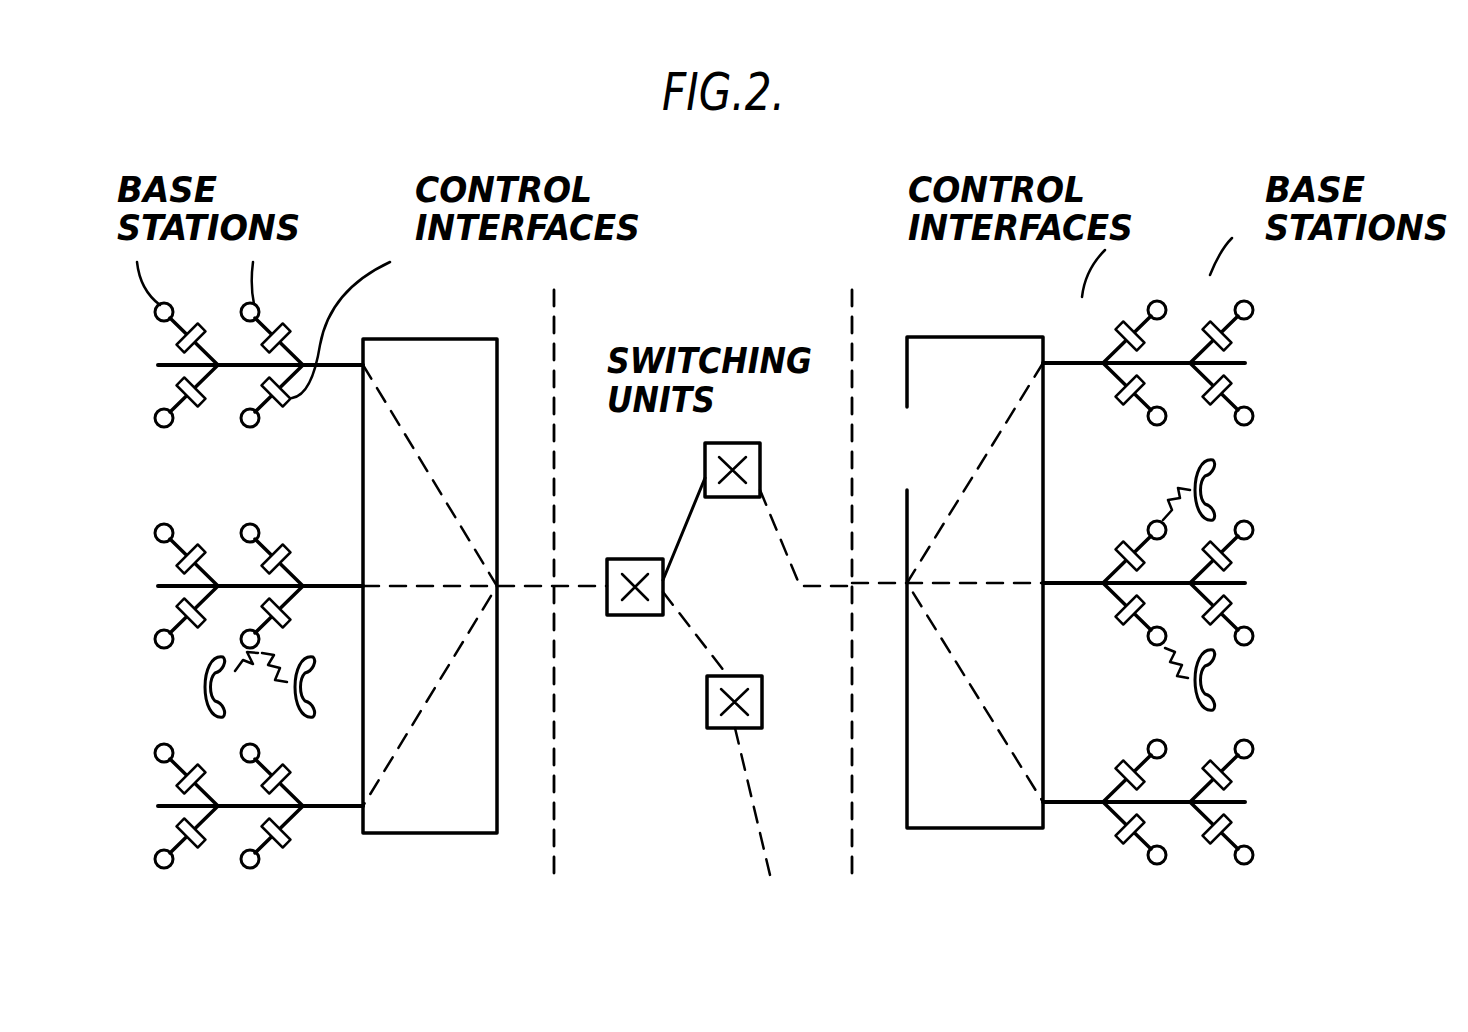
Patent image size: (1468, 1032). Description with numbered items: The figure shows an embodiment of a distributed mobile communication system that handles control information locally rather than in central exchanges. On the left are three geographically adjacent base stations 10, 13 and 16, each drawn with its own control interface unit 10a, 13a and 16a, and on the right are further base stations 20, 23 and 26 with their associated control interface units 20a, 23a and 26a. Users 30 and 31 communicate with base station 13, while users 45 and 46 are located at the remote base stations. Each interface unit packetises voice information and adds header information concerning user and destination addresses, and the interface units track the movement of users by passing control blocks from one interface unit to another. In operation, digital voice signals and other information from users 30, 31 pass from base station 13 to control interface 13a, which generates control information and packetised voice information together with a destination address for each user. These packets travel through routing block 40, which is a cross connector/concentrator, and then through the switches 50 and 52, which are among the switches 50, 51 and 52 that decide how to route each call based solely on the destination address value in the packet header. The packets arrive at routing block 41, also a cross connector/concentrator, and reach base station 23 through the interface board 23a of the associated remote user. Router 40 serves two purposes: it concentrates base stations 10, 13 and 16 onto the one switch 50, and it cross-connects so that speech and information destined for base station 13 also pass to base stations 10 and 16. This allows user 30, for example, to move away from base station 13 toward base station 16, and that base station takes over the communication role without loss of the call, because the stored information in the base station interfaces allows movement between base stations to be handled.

The base station 10 is at (168, 304).
The control interface unit 10a is at (177, 392).
The base station 13 is at (247, 526).
The control interface unit 13a is at (177, 612).
The base station 16 is at (241, 752).
The control interface unit 16a is at (177, 832).
The base station 20 is at (1243, 300).
The control interface unit 20a is at (1120, 400).
The base station 23 is at (1148, 522).
The control interface unit 23a is at (1120, 615).
The base station 26 is at (1240, 744).
The control interface unit 26a is at (1120, 835).
The user 30 is at (203, 684).
The user 31 is at (311, 690).
The routing block 40 is at (432, 352).
The routing block 41 is at (975, 350).
The user 45 is at (1218, 470).
The user 46 is at (1218, 695).
The switch 50 is at (630, 560).
The switch 51 is at (752, 698).
The switch 52 is at (708, 458).